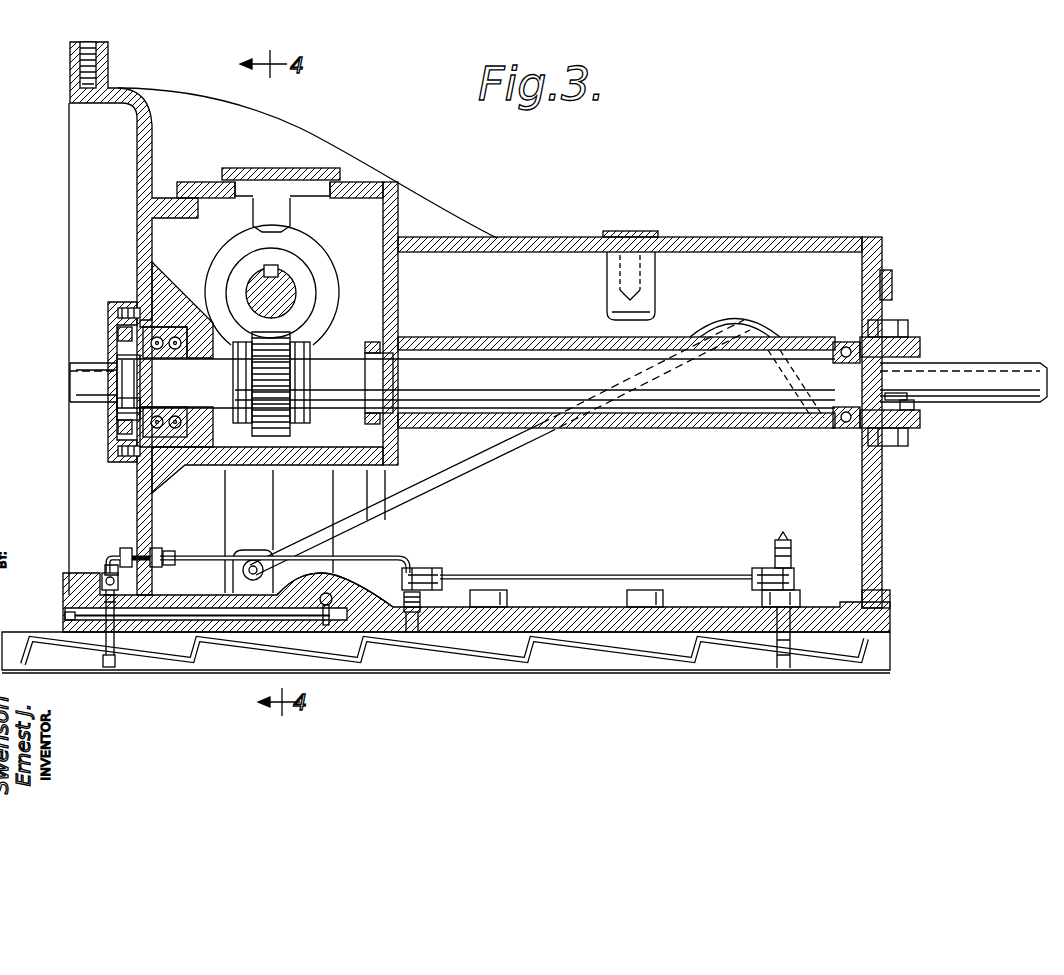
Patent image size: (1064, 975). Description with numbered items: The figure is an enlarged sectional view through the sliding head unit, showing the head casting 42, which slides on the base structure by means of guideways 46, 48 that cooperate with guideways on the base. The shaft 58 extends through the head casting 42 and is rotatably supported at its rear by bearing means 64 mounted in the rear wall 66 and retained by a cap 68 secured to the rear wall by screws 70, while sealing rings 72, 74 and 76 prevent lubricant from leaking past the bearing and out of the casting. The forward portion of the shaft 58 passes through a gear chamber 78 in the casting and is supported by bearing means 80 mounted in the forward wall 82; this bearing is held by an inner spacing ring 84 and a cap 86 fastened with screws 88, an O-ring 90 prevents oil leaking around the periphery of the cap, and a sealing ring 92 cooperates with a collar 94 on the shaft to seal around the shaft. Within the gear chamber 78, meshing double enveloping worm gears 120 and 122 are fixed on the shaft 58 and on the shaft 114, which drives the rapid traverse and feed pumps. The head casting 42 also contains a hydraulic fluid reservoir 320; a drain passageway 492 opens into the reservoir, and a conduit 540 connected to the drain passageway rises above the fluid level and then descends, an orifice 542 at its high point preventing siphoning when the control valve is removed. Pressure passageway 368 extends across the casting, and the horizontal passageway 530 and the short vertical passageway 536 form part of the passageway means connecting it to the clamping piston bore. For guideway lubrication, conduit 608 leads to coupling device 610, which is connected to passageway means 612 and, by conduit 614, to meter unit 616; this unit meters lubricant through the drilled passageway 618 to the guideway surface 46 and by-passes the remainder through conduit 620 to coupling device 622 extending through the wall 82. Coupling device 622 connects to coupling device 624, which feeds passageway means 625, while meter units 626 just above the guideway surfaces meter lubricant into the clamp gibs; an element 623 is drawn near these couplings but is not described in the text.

The head casting 42 is at (565, 240).
The guideway 46 is at (882, 646).
The guideway 48 is at (812, 670).
The shaft 58 is at (912, 385).
The bearing means 64 is at (890, 322).
The rear wall 66 is at (882, 478).
The cap 68 is at (900, 326).
The screws 70 is at (910, 338).
The sealing ring 72 is at (840, 428).
The sealing ring 74 is at (908, 400).
The sealing ring 76 is at (914, 407).
The gear chamber 78 is at (357, 330).
The bearing means 80 is at (160, 330).
The forward wall 82 is at (137, 497).
The inner spacing ring 84 is at (190, 327).
The cap 86 is at (108, 328).
The screws 88 is at (118, 451).
The O-ring 90 is at (117, 437).
The sealing ring 92 is at (118, 345).
The collar 94 is at (118, 313).
The shaft 114 is at (293, 278).
The worm gear 120 is at (300, 433).
The worm gear 122 is at (300, 293).
The hydraulic fluid reservoir 320 is at (607, 610).
The passageway 368 is at (322, 600).
The passageway 492 is at (253, 560).
The horizontal passageway 530 is at (185, 617).
The short vertical passageway 536 is at (333, 608).
The conduit 540 is at (712, 325).
The orifice 542 is at (738, 318).
The conduit 608 is at (780, 532).
The coupling device 610 is at (793, 578).
The passageway means 612 is at (766, 632).
The conduit 614 is at (560, 577).
The meter unit 616 is at (425, 572).
The drilled passageway 618 is at (410, 614).
The conduit 620 is at (380, 558).
The coupling device 622 is at (158, 552).
The elbow 623 is at (106, 560).
The coupling device 624 is at (105, 570).
The passageway means 625 is at (102, 580).
The meter unit 626 is at (108, 668).